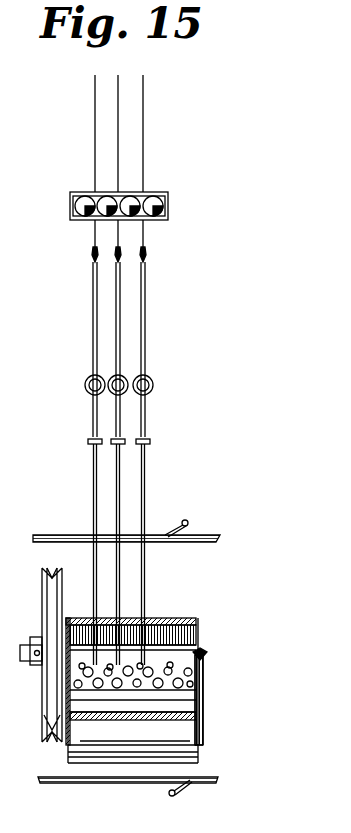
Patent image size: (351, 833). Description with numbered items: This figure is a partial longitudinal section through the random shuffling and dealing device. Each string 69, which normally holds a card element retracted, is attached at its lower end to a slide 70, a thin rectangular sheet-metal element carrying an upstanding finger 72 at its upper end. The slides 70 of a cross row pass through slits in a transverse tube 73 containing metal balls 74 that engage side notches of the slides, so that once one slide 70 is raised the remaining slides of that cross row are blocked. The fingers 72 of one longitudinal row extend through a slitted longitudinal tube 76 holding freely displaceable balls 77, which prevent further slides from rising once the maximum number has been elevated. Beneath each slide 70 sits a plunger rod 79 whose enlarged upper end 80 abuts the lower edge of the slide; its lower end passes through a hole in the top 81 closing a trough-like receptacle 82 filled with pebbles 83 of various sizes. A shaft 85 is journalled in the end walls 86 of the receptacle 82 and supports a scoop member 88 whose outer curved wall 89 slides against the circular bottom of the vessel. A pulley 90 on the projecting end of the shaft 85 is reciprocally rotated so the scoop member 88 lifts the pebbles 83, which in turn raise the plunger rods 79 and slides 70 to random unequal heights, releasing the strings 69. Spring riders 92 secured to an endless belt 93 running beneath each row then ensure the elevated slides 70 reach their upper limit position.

The string 69 is at (118, 114).
The slide 70 is at (141, 305).
The finger 72 is at (143, 236).
The transverse tube 73 is at (86, 392).
The metal balls 74 is at (98, 380).
The longitudinal tube 76 is at (70, 196).
The balls 77 is at (168, 196).
The plunger rod 79 is at (120, 502).
The enlarged upper end 80 is at (150, 441).
The top 81 is at (160, 620).
The trough-like receptacle 82 is at (75, 757).
The pebbles 83 is at (188, 670).
The shaft 85 is at (200, 656).
The end walls 86 is at (66, 640).
The scoop member 88 is at (207, 656).
The outer curved wall 89 is at (190, 695).
The pulley 90 is at (46, 606).
The spring riders 92 is at (184, 519).
The endless belt 93 is at (205, 542).